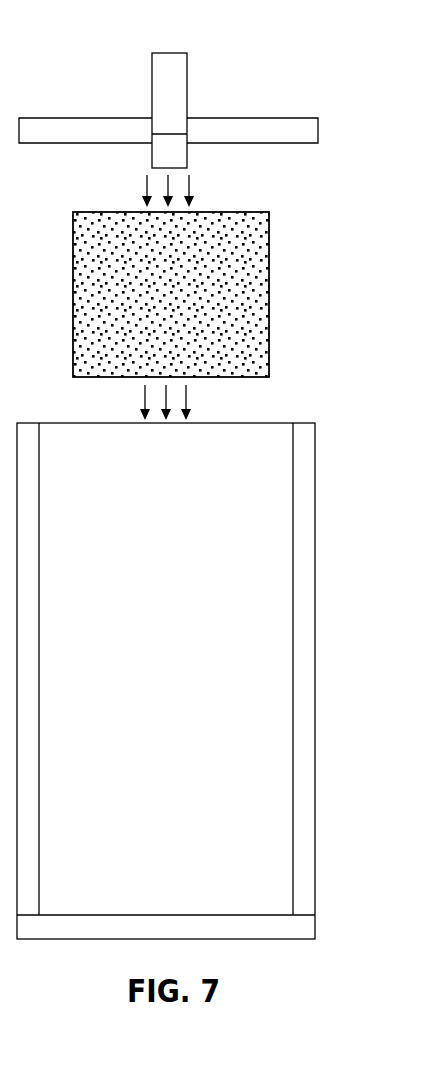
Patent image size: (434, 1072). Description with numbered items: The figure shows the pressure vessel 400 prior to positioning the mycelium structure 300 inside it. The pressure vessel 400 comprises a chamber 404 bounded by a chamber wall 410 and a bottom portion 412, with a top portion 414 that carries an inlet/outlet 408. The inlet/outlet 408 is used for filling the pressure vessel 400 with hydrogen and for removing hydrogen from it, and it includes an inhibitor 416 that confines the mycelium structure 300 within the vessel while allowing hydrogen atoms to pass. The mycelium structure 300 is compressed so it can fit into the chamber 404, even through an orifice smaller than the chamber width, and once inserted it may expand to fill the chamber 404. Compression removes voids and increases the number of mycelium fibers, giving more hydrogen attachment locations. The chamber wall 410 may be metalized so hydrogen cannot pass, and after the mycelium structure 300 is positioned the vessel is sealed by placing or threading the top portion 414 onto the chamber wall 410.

The pressure vessel 400 is at (323, 46).
The inlet/outlet 408 is at (187, 75).
The inhibitor 416 is at (168, 152).
The top portion 414 is at (233, 118).
The mycelium structure 300 is at (237, 315).
The chamber 404 is at (293, 538).
The chamber wall 410 is at (305, 610).
The bottom portion 412 is at (315, 928).